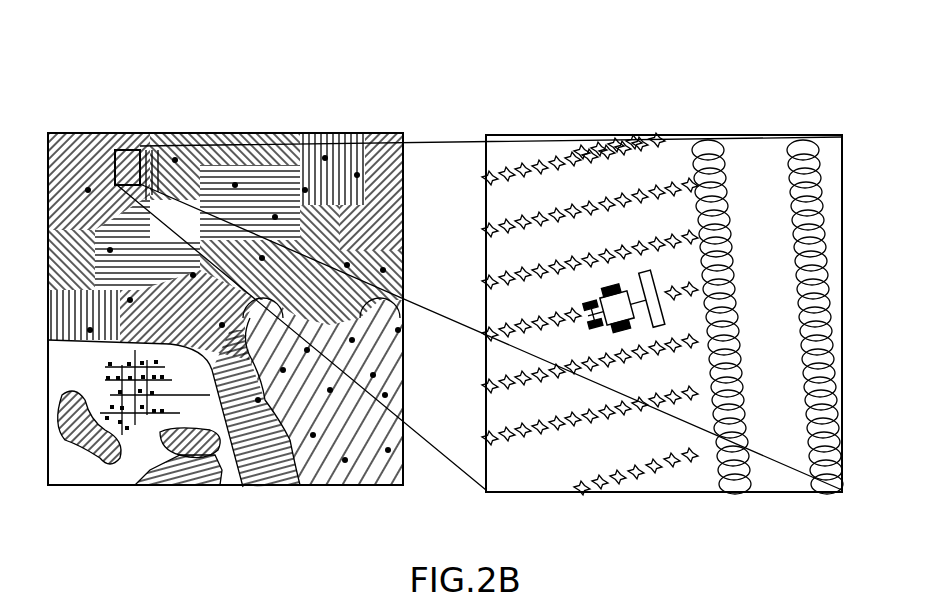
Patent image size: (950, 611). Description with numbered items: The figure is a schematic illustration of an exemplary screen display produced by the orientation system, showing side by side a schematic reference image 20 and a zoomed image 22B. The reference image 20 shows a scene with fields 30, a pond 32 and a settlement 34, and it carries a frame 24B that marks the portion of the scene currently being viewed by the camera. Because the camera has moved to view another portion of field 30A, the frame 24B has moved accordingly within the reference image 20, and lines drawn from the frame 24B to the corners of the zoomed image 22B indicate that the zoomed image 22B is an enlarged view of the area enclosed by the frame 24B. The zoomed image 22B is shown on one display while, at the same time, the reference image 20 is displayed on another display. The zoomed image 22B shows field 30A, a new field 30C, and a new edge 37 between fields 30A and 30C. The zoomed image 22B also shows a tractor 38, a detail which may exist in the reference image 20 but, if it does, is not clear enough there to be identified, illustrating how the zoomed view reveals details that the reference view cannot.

The reference image 20 is at (141, 116).
The zoomed image 22B is at (684, 116).
The frame 24B is at (125, 150).
The fields 30 is at (58, 228).
The field 30A is at (552, 445).
The new field 30C is at (765, 472).
The pond 32 is at (365, 472).
The settlement 34 is at (150, 408).
The new edge 37 is at (142, 172).
The tractor 38 is at (620, 292).